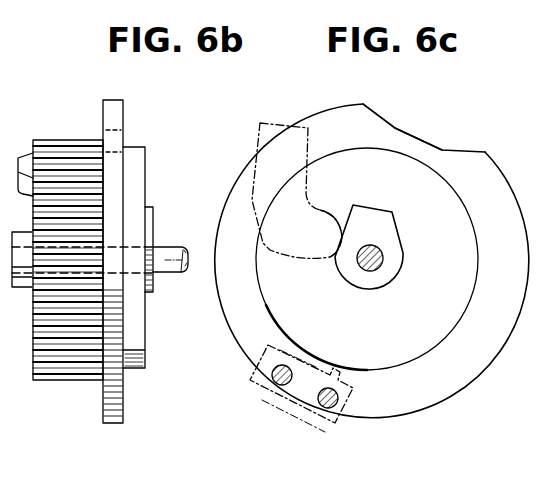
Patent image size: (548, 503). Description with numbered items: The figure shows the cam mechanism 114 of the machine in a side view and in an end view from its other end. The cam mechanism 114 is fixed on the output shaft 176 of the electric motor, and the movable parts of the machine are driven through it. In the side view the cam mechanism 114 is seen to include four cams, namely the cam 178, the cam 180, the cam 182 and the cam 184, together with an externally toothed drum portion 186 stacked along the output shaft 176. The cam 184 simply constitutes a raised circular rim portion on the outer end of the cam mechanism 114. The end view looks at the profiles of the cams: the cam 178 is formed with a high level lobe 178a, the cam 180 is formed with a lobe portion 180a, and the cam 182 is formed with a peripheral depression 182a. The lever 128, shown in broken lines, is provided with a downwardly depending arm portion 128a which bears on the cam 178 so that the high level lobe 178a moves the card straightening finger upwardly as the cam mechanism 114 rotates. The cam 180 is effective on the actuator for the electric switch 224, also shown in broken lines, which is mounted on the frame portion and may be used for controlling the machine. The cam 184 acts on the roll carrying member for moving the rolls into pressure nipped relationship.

In FIG. 6b, the cam mechanism 114 is at (79, 112).
In FIG. 6c, the cam mechanism 114 is at (372, 418).
In FIG. 6c, the lever 128 is at (262, 121).
In FIG. 6c, the arm portion 128a is at (328, 254).
In FIG. 6b, the output shaft 176 is at (171, 250).
In FIG. 6c, the output shaft 176 is at (375, 270).
In FIG. 6b, the cam 178 is at (149, 210).
In FIG. 6c, the high level lobe 178a is at (371, 205).
In FIG. 6b, the cam 180 is at (139, 147).
In FIG. 6c, the cam 180 is at (283, 313).
In FIG. 6c, the lobe portion 180a is at (327, 150).
In FIG. 6b, the cam 182 is at (122, 403).
In FIG. 6c, the cam 182 is at (315, 116).
In FIG. 6c, the peripheral depression 182a is at (407, 130).
In FIG. 6b, the cam 184 is at (26, 157).
In FIG. 6b, the externally toothed drum portion 186 is at (73, 374).
In FIG. 6c, the electric switch 224 is at (265, 397).